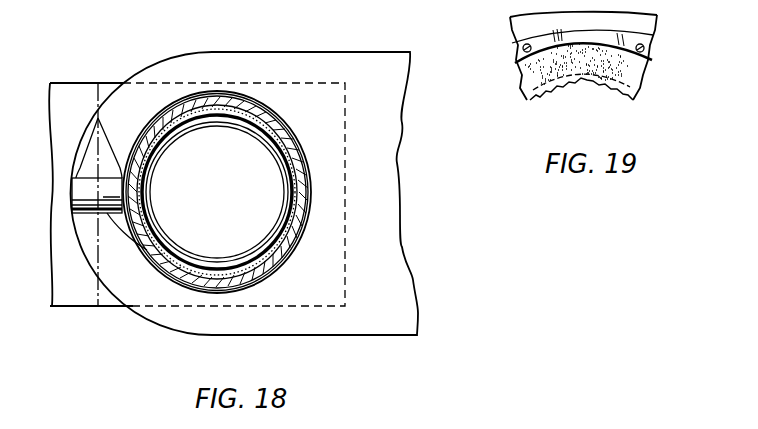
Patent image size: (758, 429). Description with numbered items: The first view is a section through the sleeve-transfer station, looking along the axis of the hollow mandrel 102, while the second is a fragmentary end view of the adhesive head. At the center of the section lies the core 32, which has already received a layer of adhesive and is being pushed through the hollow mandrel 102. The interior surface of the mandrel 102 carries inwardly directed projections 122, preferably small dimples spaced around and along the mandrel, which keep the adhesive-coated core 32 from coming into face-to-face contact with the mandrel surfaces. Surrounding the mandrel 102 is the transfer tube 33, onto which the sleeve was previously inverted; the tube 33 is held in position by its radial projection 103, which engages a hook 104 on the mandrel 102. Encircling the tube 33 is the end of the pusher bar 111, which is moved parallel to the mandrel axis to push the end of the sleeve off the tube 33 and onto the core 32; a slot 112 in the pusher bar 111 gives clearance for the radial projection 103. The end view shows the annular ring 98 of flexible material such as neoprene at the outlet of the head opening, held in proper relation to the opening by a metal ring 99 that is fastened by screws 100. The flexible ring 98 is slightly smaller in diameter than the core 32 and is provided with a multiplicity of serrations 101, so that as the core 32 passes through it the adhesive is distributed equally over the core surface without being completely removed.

In FIG. 18, the pusher bar 111 is at (342, 59).
In FIG. 18, the slot 112 is at (92, 168).
In FIG. 18, the radial projection 103 is at (78, 214).
In FIG. 18, the hook 104 is at (118, 167).
In FIG. 18, the core 32 is at (163, 145).
In FIG. 18, the inwardly directed projections 122 is at (213, 113).
In FIG. 18, the transfer tube 33 is at (178, 110).
In FIG. 18, the hollow mandrel 102 is at (268, 121).
In FIG. 19, the annular ring 98 is at (647, 77).
In FIG. 19, the metal ring 99 is at (628, 37).
In FIG. 19, the screws 100 is at (648, 50).
In FIG. 19, the serrations 101 is at (585, 80).